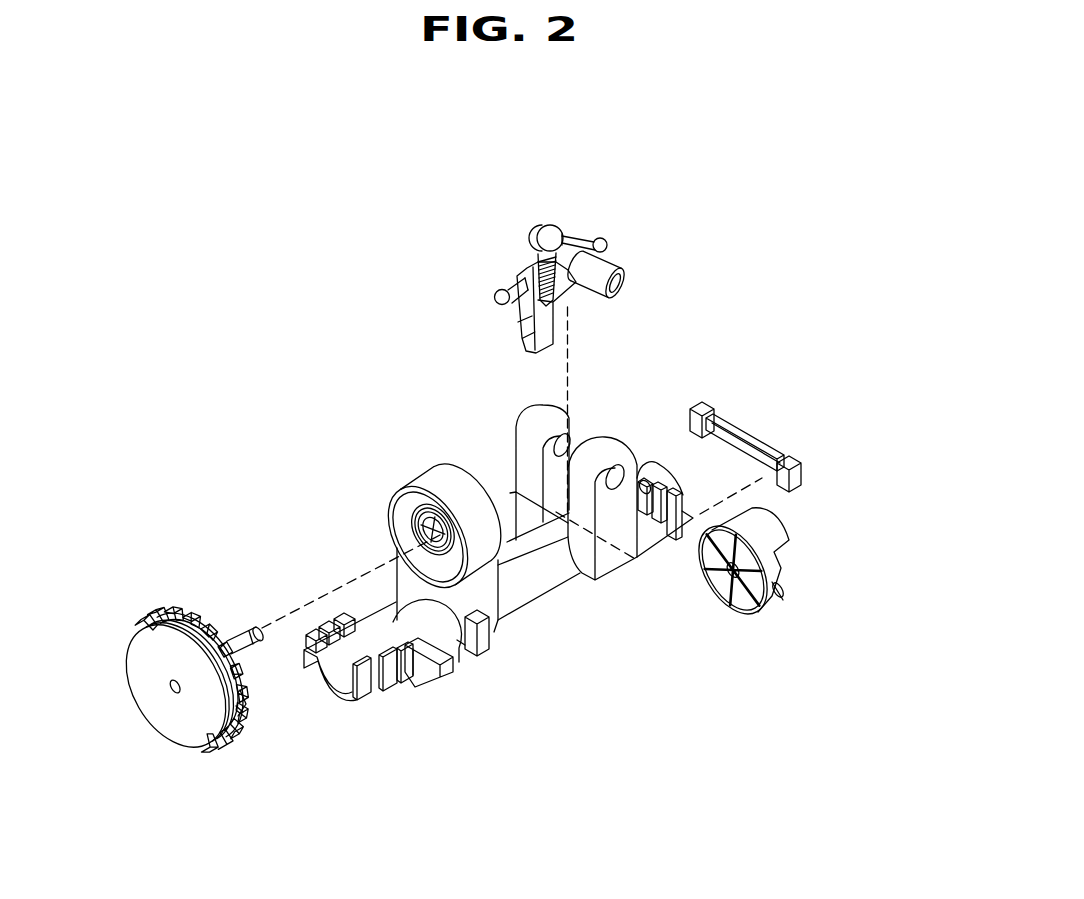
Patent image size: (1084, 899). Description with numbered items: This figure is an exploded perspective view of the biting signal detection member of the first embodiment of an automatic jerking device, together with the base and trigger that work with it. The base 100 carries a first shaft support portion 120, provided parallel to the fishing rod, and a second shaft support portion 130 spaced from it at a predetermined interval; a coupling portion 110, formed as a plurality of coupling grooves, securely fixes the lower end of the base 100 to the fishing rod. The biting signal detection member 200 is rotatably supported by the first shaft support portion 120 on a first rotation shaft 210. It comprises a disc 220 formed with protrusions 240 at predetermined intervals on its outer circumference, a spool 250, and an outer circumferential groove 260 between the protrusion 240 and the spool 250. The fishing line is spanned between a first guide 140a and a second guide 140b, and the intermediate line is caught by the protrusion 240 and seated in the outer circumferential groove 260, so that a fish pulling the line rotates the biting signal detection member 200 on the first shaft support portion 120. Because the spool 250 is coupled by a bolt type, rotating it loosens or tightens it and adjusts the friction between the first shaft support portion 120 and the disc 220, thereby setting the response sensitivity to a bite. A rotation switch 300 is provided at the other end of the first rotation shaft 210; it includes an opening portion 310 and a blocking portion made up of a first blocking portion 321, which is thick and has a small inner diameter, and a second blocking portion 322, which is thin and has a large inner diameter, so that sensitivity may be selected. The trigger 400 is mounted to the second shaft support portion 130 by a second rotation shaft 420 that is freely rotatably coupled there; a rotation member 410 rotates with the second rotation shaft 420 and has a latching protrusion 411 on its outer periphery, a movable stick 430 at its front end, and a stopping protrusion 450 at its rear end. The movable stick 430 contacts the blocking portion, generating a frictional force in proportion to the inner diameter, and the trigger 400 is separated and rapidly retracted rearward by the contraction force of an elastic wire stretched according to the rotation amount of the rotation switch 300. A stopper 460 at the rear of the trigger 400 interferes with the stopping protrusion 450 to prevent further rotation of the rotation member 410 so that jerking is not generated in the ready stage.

The base 100 is at (540, 583).
The coupling portion 110 is at (390, 683).
The first shaft support portion 120 is at (390, 562).
The second shaft support portion 130 is at (617, 565).
The first guide 140a is at (436, 668).
The second guide 140b is at (493, 647).
The biting signal detection member 200 is at (124, 592).
The first rotation shaft 210 is at (248, 632).
The disc 220 is at (175, 608).
The protrusions 240 is at (248, 710).
The spool 250 is at (137, 643).
The outer circumferential groove 260 is at (213, 727).
The rotation switch 300 is at (882, 509).
The opening portion 310 is at (785, 574).
The first blocking portion 321 is at (785, 529).
The second blocking portion 322 is at (790, 594).
The trigger 400 is at (532, 204).
The rotation member 410 is at (572, 229).
The latching protrusion 411 is at (533, 257).
The second rotation shaft 420 is at (628, 269).
The movable stick 430 is at (494, 299).
The stopping protrusion 450 is at (606, 243).
The stopper 460 is at (757, 428).